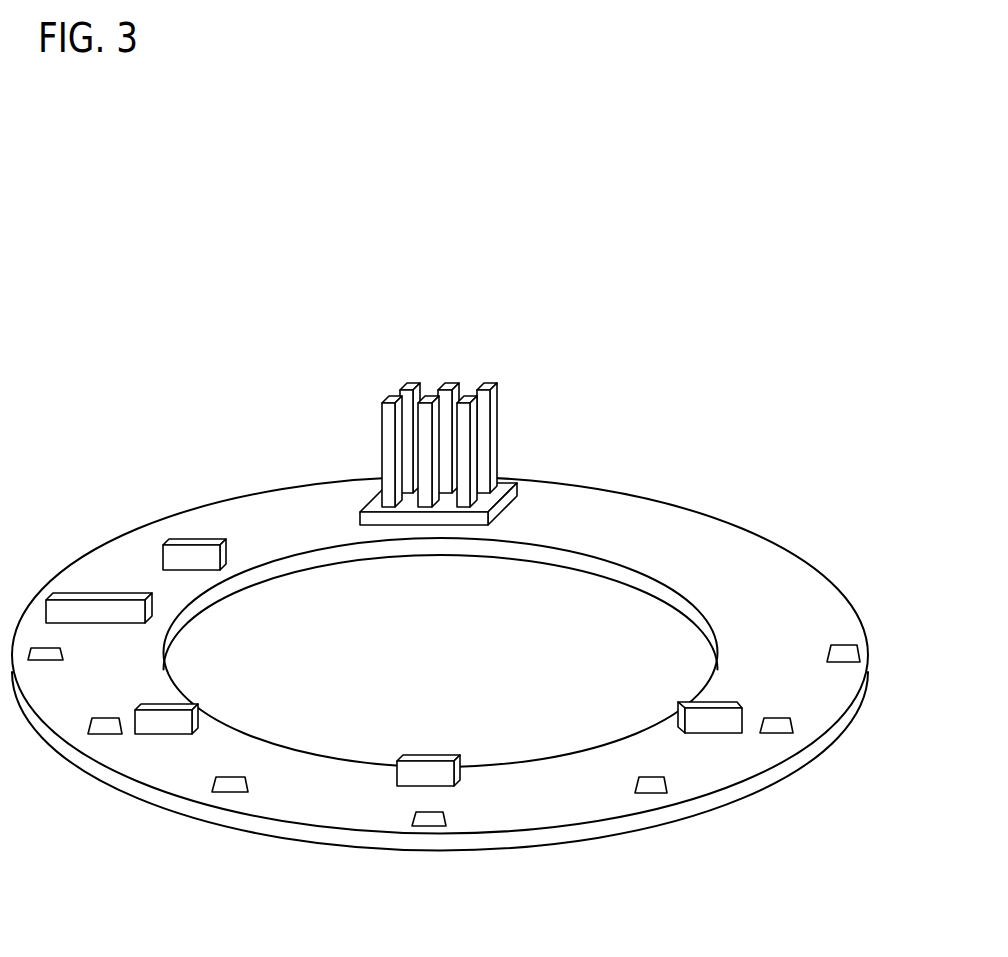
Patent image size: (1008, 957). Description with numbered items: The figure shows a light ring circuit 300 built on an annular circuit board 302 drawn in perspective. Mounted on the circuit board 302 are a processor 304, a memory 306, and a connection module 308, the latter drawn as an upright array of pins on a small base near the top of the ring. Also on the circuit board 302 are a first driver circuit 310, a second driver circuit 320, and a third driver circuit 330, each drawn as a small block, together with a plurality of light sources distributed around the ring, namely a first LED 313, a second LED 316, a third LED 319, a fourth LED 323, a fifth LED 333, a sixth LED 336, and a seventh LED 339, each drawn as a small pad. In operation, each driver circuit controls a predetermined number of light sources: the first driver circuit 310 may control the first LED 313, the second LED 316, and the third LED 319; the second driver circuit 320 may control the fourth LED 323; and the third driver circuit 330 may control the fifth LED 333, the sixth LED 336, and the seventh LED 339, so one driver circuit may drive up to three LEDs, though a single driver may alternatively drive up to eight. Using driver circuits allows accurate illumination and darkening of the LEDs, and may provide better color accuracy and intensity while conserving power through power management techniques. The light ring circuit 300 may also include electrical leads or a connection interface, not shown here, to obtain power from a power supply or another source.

The light ring circuit 300 is at (188, 258).
The circuit board 302 is at (640, 492).
The processor 304 is at (152, 604).
The memory 306 is at (227, 546).
The connection module 308 is at (493, 403).
The first driver circuit 310 is at (198, 712).
The LED 1 313 is at (63, 653).
The LED 2 316 is at (90, 727).
The LED 3 319 is at (214, 789).
The second driver circuit 320 is at (455, 762).
The LED 4 323 is at (447, 821).
The third driver circuit 330 is at (680, 713).
The LED 5 333 is at (667, 782).
The LED 6 336 is at (793, 729).
The LED 7 339 is at (860, 653).